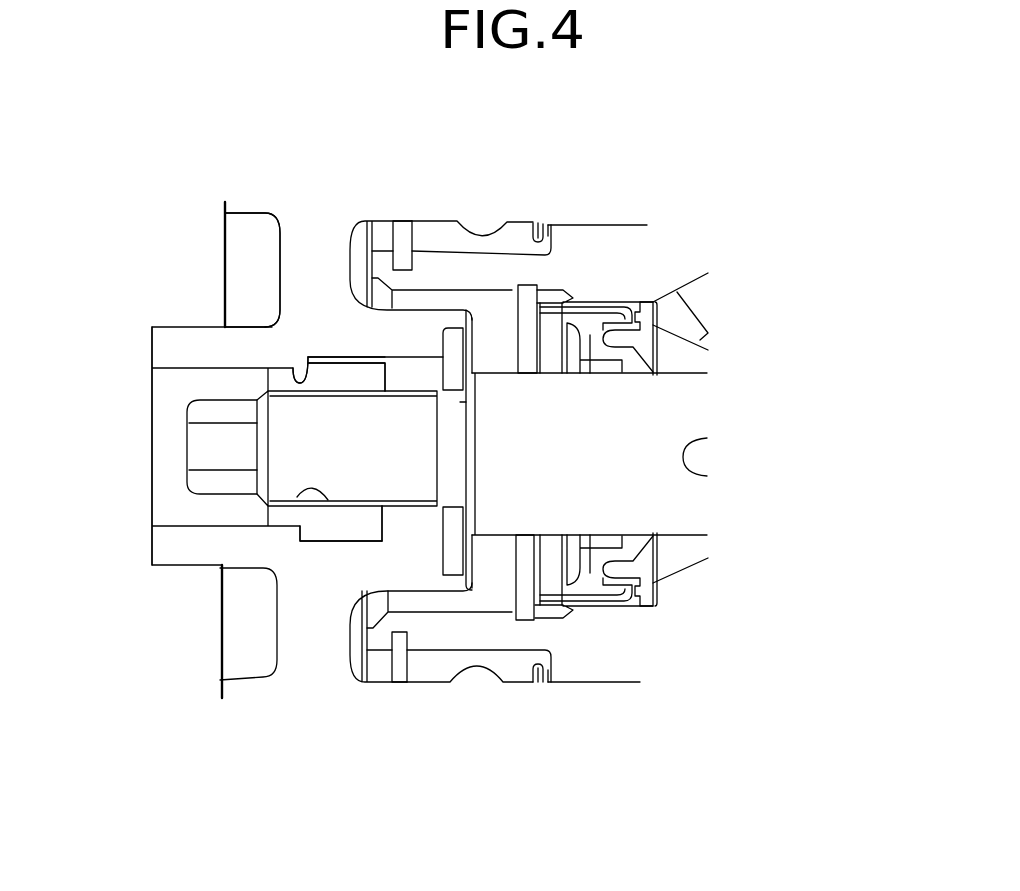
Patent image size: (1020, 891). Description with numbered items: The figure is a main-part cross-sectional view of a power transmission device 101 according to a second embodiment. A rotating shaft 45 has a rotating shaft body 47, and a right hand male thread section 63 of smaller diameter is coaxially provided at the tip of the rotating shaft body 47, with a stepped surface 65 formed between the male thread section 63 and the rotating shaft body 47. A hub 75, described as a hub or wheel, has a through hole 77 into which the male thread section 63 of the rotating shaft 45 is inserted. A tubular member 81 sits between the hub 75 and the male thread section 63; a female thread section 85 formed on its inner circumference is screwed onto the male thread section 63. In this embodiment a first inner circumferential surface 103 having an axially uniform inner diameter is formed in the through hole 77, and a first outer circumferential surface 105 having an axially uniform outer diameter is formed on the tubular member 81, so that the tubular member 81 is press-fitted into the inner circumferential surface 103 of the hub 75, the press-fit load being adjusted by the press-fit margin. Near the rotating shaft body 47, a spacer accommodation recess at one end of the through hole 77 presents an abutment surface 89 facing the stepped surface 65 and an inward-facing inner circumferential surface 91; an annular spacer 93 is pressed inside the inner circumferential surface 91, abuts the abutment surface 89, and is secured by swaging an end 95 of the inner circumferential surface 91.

The rotating shaft 45 is at (190, 445).
The rotating shaft body 47 is at (492, 537).
The right hand male thread section 63 is at (372, 507).
The stepped surface 65 is at (442, 522).
The hub 75 is at (280, 255).
The through hole 77 is at (187, 526).
The tubular member 81 is at (358, 377).
The female thread section 85 is at (312, 483).
The abutment surface 89 is at (460, 349).
The inner circumferential surface 91 is at (528, 287).
The annular spacer 93 is at (453, 553).
The end 95 is at (476, 342).
The power transmission device 101 is at (433, 188).
The first inner circumferential surface 103 is at (313, 363).
The first outer circumferential surface 105 is at (285, 372).